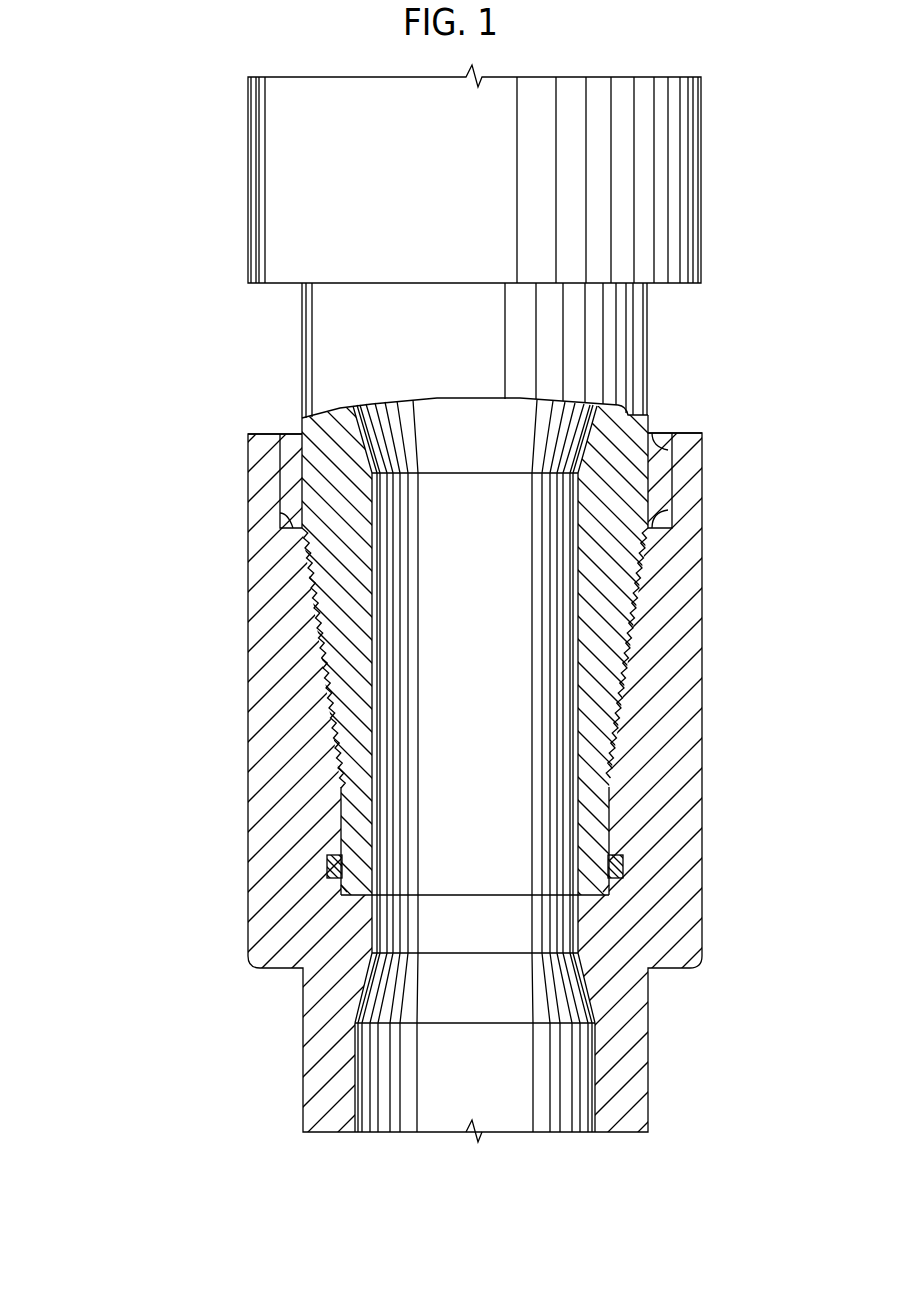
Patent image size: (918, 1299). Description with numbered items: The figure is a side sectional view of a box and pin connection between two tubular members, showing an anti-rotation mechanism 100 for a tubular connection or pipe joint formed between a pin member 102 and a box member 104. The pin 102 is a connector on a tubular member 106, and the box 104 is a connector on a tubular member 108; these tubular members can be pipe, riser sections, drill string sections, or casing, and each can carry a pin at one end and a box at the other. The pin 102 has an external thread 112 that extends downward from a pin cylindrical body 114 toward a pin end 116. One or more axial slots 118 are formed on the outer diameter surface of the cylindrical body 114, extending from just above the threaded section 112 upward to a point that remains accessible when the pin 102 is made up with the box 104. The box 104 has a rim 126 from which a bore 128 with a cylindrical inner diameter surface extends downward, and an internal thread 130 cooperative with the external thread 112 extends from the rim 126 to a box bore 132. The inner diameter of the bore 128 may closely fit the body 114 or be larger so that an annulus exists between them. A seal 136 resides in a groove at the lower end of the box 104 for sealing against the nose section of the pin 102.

The anti-rotation mechanism 100 is at (156, 174).
The pin member 102 is at (345, 667).
The box member 104 is at (248, 843).
The tubular member 106 is at (716, 190).
The tubular member 108 is at (650, 1068).
The external thread 112 is at (330, 745).
The pin cylindrical body 114 is at (287, 250).
The pin end 116 is at (593, 903).
The axial slot 118 is at (300, 465).
The rim 126 is at (255, 433).
The bore 128 is at (286, 498).
The internal thread 130 is at (318, 604).
The box bore 132 is at (385, 924).
The seal 136 is at (623, 867).